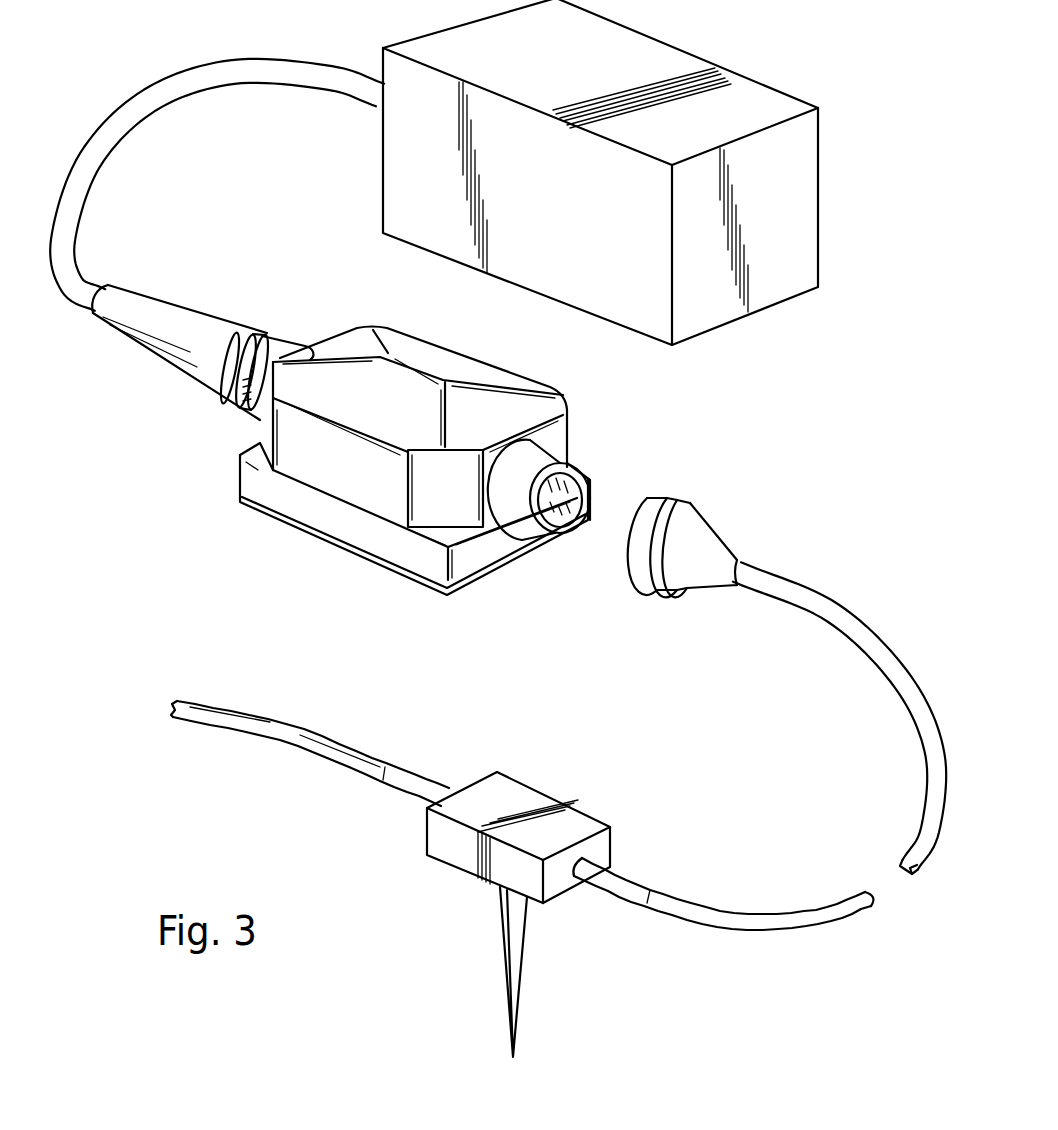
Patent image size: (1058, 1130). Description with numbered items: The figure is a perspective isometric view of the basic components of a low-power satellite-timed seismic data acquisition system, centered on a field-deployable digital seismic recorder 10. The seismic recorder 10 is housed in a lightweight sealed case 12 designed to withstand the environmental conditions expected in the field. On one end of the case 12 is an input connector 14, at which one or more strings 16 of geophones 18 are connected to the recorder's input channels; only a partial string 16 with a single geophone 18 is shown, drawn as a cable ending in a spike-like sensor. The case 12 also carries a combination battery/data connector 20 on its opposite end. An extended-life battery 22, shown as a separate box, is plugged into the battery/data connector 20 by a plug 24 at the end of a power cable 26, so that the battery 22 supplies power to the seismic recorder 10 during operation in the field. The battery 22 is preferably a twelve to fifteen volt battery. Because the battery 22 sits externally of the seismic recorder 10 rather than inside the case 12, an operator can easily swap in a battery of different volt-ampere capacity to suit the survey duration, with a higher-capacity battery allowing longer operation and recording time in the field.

The digital seismic recorder 10 is at (266, 513).
The sealed case 12 is at (347, 528).
The input connector 14 is at (587, 492).
The string of geophones 16 is at (863, 657).
The geophone 18 is at (518, 778).
The battery/data connector 20 is at (312, 340).
The extended-life battery 22 is at (672, 45).
The plug 24 is at (233, 410).
The power cable 26 is at (187, 97).